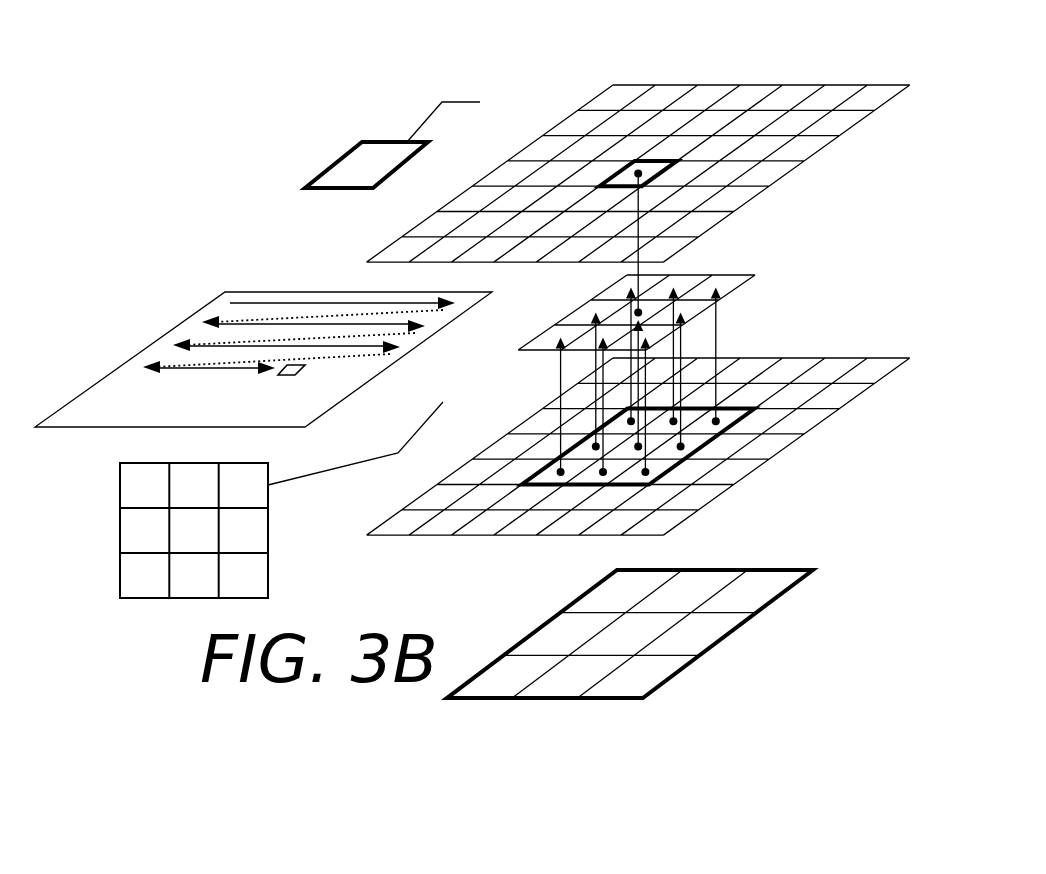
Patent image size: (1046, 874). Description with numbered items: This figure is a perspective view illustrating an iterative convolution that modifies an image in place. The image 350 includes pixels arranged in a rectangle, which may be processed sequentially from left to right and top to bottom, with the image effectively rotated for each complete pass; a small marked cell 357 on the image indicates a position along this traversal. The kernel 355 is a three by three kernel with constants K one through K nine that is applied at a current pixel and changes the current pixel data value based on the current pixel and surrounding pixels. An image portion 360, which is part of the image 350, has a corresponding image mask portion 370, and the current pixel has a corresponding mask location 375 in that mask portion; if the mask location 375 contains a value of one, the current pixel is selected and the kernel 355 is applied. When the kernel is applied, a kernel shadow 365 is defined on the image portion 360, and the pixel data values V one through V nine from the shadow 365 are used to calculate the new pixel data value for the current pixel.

The image 350 is at (325, 292).
The kernel area 355 is at (533, 352).
The kernel position 357 is at (293, 375).
The image portion 360 is at (792, 358).
The kernel shadow 365 is at (698, 570).
The image mask portion 370 is at (715, 85).
The mask location 375 is at (665, 158).